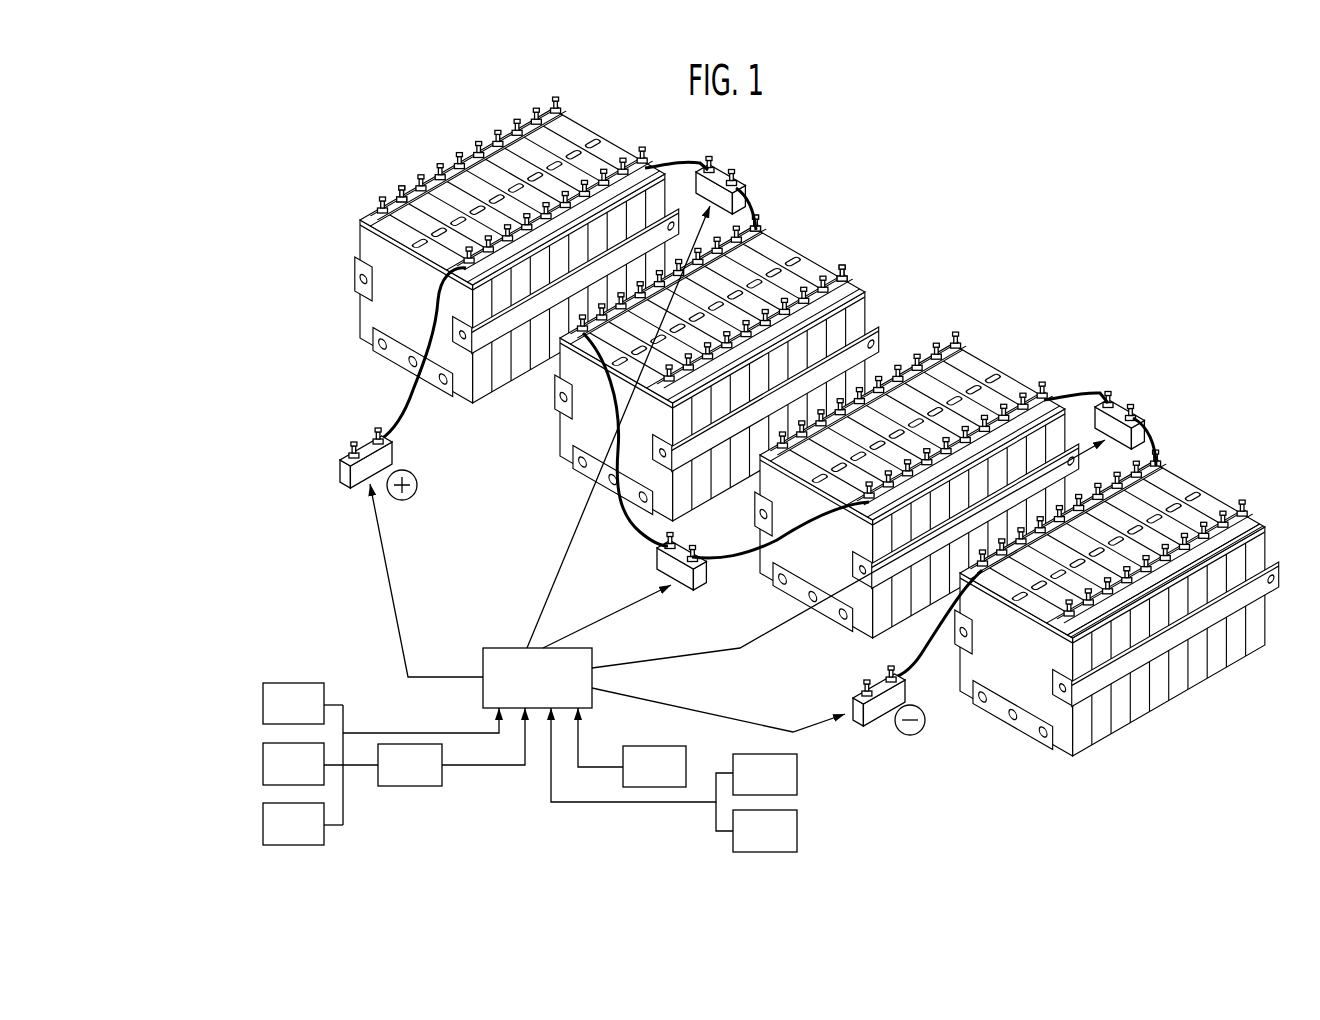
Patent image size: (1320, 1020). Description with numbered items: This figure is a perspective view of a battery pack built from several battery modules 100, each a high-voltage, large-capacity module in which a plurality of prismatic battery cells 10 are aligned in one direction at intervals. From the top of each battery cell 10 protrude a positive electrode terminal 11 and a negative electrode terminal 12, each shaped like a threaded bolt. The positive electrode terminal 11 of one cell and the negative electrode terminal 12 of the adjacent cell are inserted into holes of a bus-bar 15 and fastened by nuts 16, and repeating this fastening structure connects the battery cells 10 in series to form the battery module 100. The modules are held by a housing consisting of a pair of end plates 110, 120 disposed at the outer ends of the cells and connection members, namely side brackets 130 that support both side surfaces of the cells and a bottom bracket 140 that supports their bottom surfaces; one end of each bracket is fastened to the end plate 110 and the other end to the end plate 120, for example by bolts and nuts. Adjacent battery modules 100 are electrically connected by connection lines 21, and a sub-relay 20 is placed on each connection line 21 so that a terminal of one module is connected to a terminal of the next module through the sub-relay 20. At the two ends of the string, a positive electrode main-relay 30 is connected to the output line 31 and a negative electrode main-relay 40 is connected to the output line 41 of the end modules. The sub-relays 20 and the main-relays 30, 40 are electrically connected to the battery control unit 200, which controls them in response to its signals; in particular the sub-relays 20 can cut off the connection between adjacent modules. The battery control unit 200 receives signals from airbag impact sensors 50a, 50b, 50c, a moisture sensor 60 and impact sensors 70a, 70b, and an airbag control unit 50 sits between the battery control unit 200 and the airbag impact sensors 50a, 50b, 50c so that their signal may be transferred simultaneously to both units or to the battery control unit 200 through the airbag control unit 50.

The battery module 100 is at (809, 429).
The battery cell 10 is at (717, 335).
The positive electrode terminal 11 is at (753, 214).
The negative electrode terminal 12 is at (842, 270).
The bus-bar 15 is at (378, 200).
The nut 16 is at (408, 186).
The sub-relay 20 is at (720, 168).
The connection line 21 is at (673, 161).
The positive electrode main-relay 30 is at (362, 443).
The output line 31 is at (400, 413).
The negative electrode main-relay 40 is at (858, 727).
The output line 41 is at (905, 657).
The airbag control unit 50 is at (434, 765).
The airbag impact sensor 50a is at (303, 703).
The airbag impact sensor 50b is at (320, 764).
The airbag impact sensor 50c is at (303, 824).
The moisture sensor 60 is at (632, 747).
The impact sensor 70a is at (674, 755).
The impact sensor 70b is at (756, 827).
The end plate 110 is at (1008, 678).
The end plate 120 is at (1212, 495).
The side bracket 130 is at (1143, 649).
The bottom bracket 140 is at (1027, 734).
The battery control unit (BCU) 200 is at (495, 648).